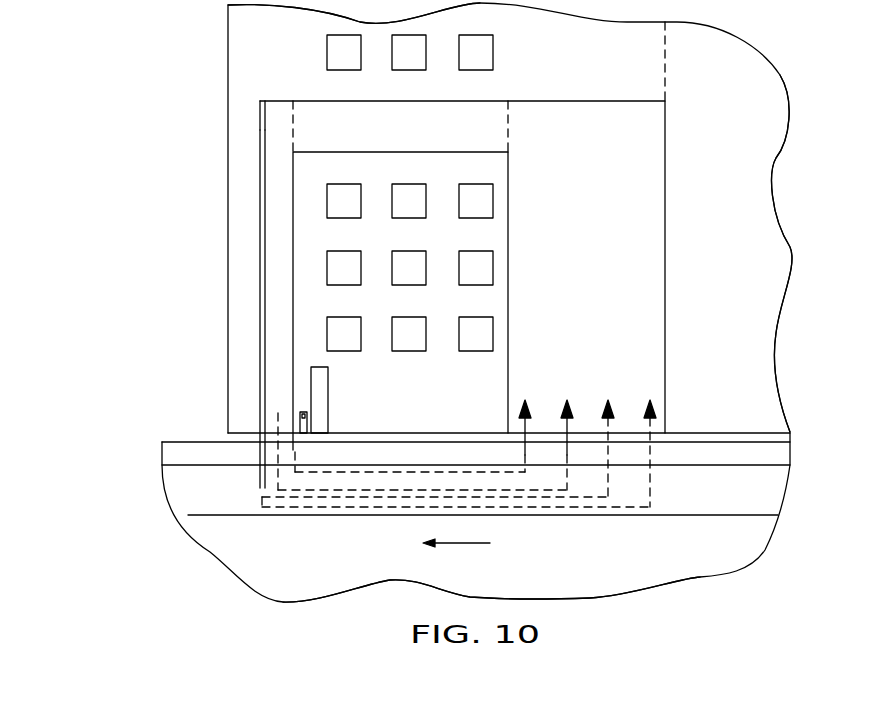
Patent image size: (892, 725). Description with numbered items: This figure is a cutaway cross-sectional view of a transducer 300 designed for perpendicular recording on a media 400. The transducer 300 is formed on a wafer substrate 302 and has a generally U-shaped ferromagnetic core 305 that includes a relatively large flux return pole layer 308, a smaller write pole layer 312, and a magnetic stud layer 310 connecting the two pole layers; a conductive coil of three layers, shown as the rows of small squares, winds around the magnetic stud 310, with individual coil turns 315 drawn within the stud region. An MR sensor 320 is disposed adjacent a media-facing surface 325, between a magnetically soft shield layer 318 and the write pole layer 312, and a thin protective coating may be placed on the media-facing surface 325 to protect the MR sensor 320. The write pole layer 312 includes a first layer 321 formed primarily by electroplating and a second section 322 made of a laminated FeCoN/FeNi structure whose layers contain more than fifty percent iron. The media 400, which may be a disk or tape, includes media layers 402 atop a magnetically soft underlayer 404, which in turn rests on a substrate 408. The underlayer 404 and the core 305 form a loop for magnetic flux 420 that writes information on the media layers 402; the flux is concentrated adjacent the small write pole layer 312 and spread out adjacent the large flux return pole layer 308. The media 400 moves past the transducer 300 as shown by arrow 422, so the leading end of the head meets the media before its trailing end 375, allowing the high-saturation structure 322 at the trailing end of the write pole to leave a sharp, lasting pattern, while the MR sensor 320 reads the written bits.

The transducer 300 is at (126, 168).
The wafer substrate 302 is at (758, 268).
The ferromagnetic core 305 is at (544, 76).
The flux return pole layer 308 is at (600, 243).
The magnetic stud layer 310 is at (418, 138).
The write pole layer 312 is at (293, 101).
The contact pads 315 is at (494, 265).
The magnetically soft shield layer 318 is at (328, 378).
The MR sensor 320 is at (307, 422).
The first layer 321 is at (270, 330).
The second section 322 is at (260, 268).
The media-facing surface 325 is at (692, 446).
The trailing end 375 is at (152, 70).
The media 400 is at (168, 580).
The media layer 402 is at (195, 448).
The magnetically soft underlayer 404 is at (692, 517).
The substrate 408 is at (605, 563).
The magnetic flux 420 is at (297, 508).
The arrow 422 is at (490, 543).